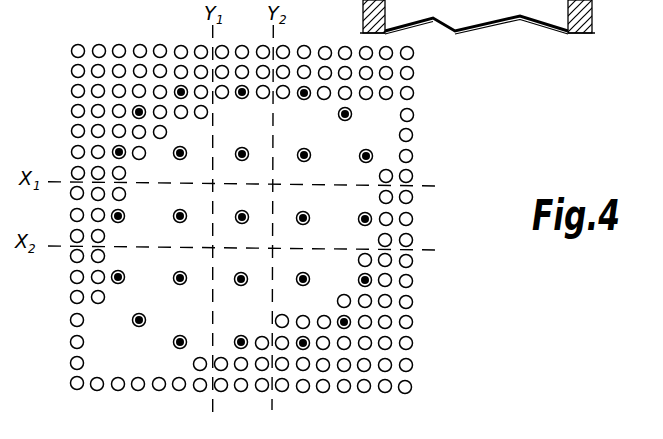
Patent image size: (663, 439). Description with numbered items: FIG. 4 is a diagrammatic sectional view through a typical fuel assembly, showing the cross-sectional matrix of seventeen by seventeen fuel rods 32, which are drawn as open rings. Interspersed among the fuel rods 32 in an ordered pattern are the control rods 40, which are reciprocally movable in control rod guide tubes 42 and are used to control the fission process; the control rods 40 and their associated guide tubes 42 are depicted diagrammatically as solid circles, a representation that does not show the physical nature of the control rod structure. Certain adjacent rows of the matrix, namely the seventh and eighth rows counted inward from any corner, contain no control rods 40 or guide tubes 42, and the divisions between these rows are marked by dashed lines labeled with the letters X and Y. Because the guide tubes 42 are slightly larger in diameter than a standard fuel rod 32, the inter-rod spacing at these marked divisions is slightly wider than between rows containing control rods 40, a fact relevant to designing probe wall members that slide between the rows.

The fuel rods 32 is at (413, 74).
The control rods 40 is at (371, 158).
The control rod guide tubes 42 is at (351, 113).